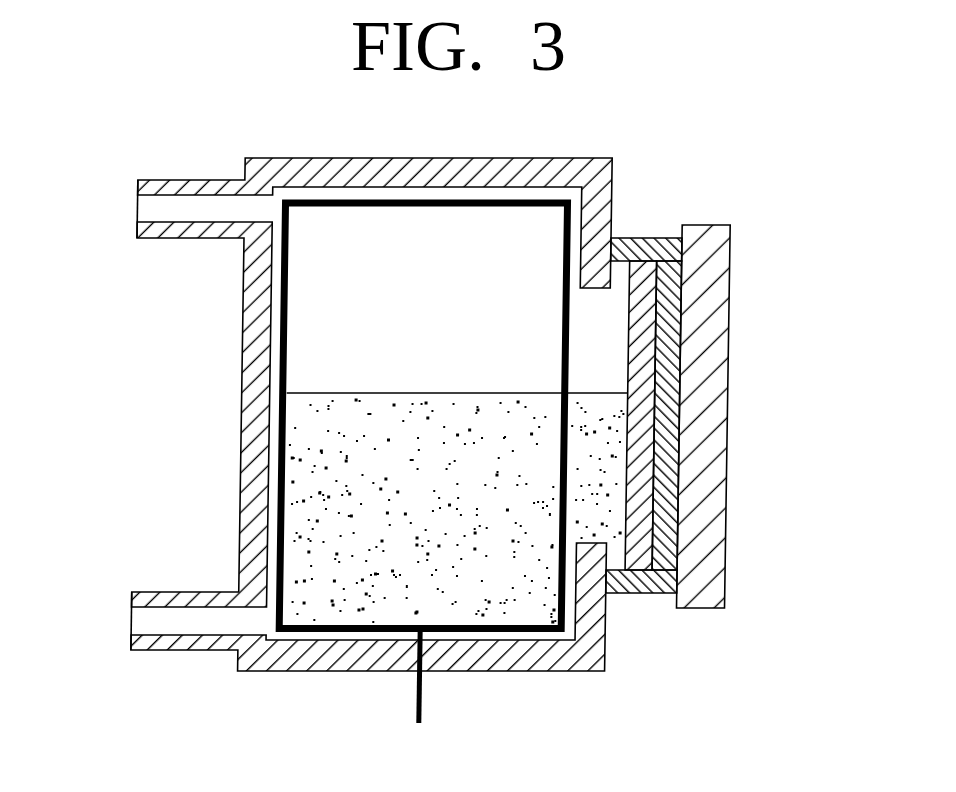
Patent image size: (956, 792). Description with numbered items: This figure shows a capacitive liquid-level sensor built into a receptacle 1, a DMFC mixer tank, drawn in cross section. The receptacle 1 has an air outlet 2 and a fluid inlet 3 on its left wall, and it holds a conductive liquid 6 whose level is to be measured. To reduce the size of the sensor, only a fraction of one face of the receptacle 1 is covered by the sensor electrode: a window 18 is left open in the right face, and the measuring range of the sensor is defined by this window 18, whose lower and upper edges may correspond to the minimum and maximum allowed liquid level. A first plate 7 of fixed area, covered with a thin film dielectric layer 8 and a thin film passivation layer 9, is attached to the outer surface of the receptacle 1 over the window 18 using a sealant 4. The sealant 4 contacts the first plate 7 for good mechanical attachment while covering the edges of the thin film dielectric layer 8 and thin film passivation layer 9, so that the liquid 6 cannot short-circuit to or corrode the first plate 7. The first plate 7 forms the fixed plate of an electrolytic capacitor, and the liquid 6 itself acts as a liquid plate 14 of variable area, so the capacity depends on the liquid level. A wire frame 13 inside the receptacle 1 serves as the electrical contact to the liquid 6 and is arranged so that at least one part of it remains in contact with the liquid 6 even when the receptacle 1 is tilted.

The receptacle 1 is at (252, 168).
The air outlet 2 is at (152, 209).
The fluid inlet 3 is at (146, 621).
The sealant 4 is at (655, 239).
The liquid 6 is at (317, 472).
The first plate 7 is at (715, 486).
The thin film dielectric layer 8 is at (662, 413).
The thin film passivation layer 9 is at (652, 368).
The wire frame 13 is at (416, 705).
The liquid plate 14 is at (600, 507).
The window 18 is at (612, 335).